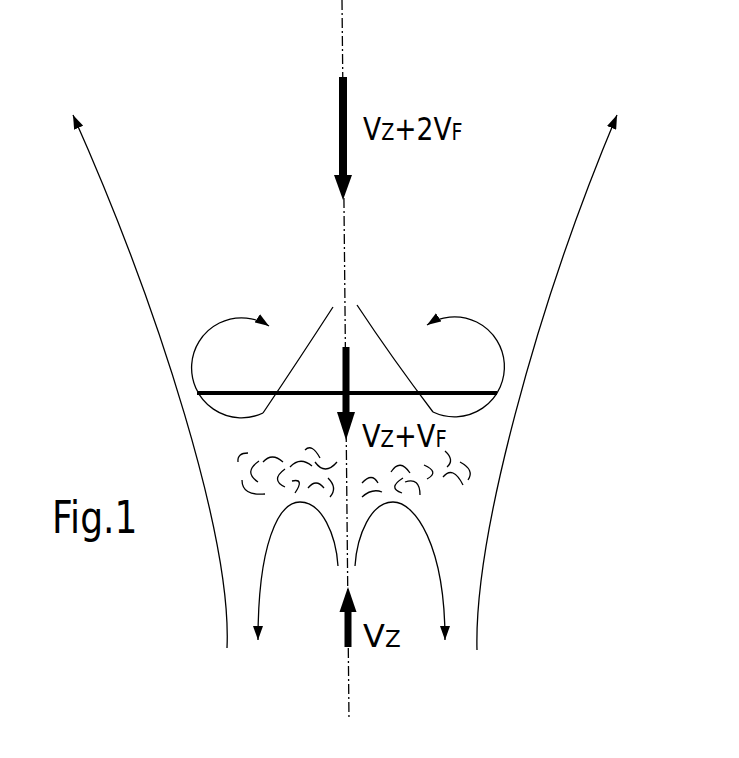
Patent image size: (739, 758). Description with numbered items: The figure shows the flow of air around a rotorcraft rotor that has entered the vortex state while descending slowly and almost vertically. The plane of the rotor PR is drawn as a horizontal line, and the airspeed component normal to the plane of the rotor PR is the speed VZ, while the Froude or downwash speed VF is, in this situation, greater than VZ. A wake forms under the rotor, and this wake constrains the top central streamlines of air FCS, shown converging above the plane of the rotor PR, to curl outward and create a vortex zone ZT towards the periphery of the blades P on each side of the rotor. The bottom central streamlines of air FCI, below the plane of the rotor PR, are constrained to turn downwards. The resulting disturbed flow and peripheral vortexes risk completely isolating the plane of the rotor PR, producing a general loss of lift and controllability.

The vortex zone ZT is at (231, 318).
The blades P is at (234, 392).
The top central streamlines of air FCS is at (362, 317).
The plane of the rotor PR is at (487, 388).
The lower central flow FCI is at (278, 523).